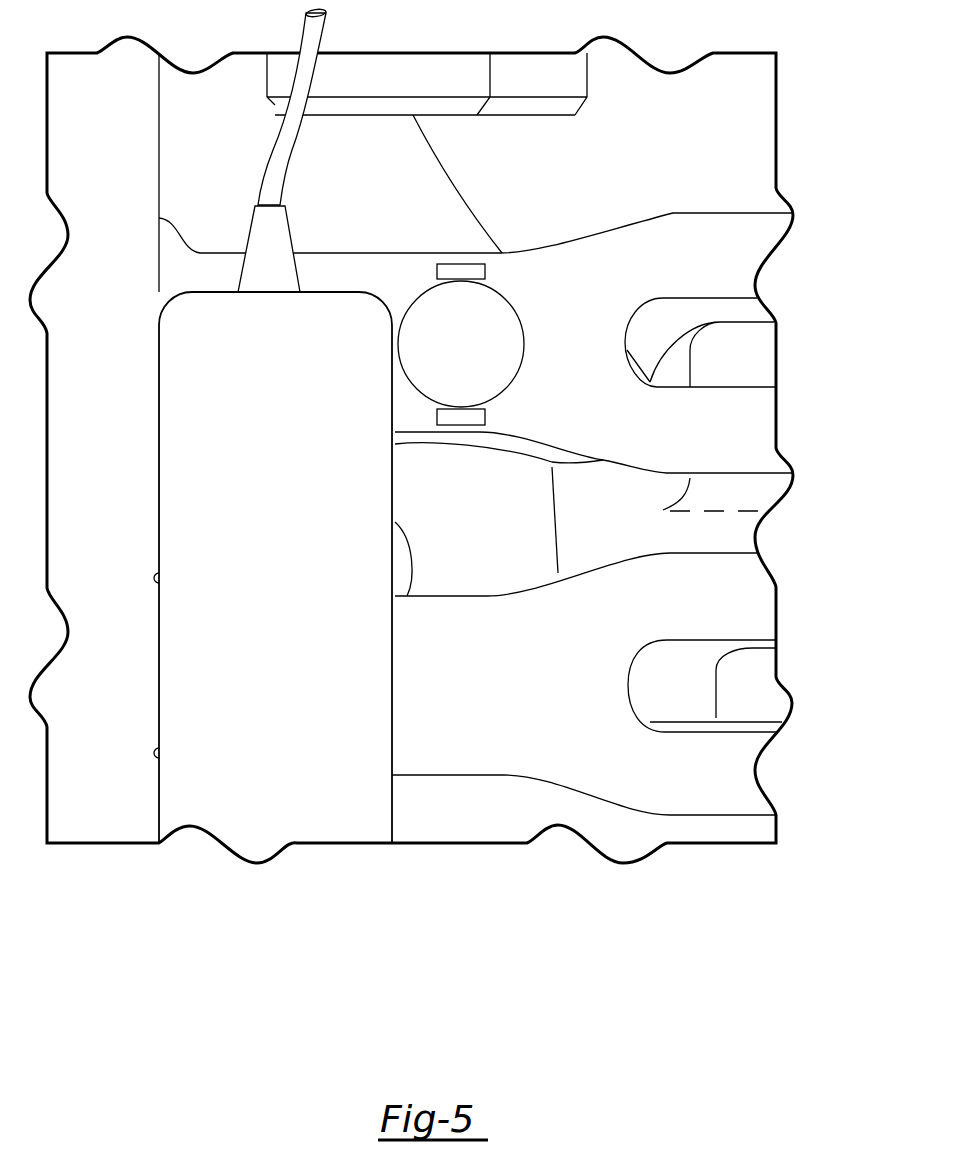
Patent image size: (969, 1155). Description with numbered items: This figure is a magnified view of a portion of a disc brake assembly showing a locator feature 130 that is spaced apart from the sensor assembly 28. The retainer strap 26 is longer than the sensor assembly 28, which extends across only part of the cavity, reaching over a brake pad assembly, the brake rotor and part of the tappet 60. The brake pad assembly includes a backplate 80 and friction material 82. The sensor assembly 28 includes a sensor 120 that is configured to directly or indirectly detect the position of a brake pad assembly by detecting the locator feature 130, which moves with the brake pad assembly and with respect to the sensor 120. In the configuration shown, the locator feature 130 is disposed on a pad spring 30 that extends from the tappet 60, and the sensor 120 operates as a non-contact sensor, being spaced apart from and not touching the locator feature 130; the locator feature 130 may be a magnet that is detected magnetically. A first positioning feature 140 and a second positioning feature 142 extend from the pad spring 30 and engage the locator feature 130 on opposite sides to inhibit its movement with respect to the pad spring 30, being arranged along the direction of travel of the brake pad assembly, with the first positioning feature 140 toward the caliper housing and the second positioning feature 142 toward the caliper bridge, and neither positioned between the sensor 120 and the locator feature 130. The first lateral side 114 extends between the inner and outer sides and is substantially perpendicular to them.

The retainer strap 26 is at (120, 430).
The sensor assembly 28 is at (288, 849).
The pad spring 30 is at (588, 347).
The tappet 60 is at (777, 522).
The backplate 80 is at (783, 678).
The friction material 82 is at (484, 824).
The first lateral side 114 is at (159, 418).
The sensor 120 is at (288, 504).
The locator feature 130 is at (479, 354).
The first positioning feature 140 is at (485, 271).
The second positioning feature 142 is at (485, 417).